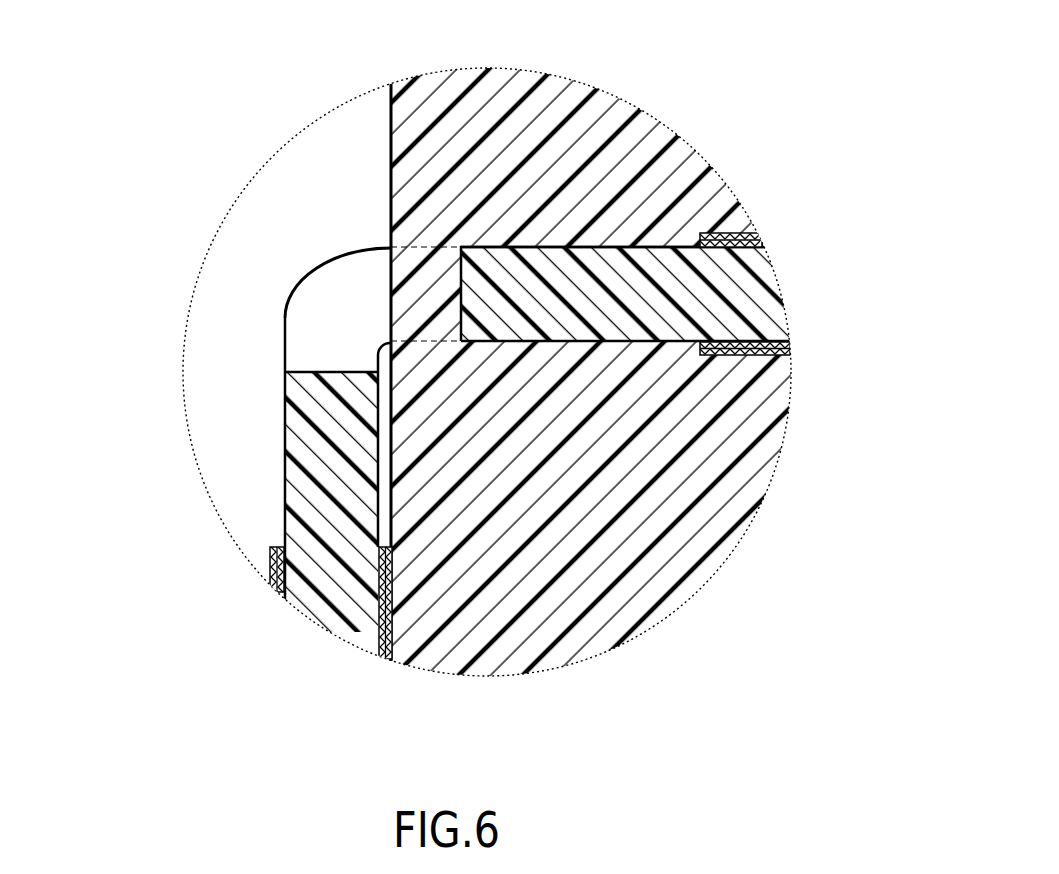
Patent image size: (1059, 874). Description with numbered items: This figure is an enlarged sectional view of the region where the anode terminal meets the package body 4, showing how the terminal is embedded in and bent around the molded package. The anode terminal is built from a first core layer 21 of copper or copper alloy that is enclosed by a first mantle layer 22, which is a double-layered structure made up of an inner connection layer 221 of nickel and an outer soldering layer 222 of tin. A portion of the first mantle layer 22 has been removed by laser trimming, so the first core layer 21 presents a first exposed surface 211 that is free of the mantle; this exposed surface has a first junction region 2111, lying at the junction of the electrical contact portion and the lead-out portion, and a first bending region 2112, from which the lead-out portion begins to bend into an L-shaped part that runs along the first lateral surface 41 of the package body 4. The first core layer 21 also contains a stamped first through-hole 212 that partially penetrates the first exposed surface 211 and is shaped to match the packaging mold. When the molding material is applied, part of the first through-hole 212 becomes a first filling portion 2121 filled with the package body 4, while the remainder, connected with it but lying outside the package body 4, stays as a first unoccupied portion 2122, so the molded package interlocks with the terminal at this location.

The package body 4 is at (514, 97).
The first lateral surface 41 is at (391, 124).
The first core layer 21 is at (305, 503).
The first exposed surface 211 is at (687, 62).
The first junction region 2111 is at (653, 247).
The first bending region 2112 is at (285, 438).
The first through-hole 212 is at (108, 200).
The first filling portion 2121 is at (440, 262).
The first unoccupied portion 2122 is at (320, 330).
The first mantle layer 22 is at (842, 192).
The inner connection layer 221 is at (745, 247).
The outer soldering layer 222 is at (730, 233).